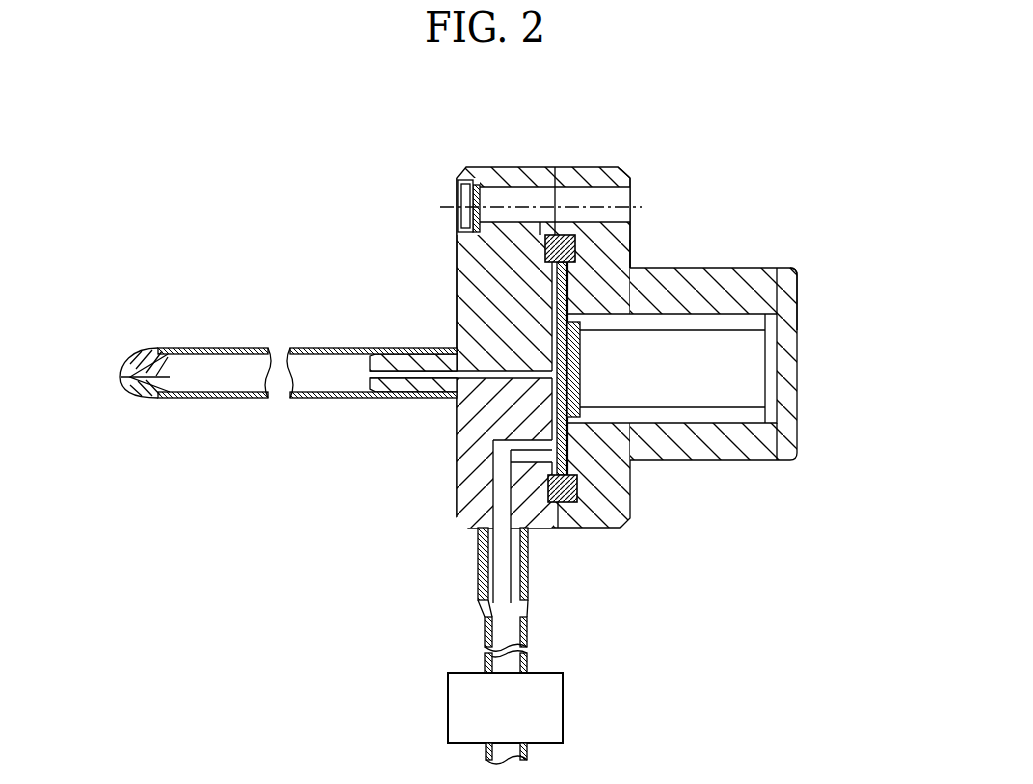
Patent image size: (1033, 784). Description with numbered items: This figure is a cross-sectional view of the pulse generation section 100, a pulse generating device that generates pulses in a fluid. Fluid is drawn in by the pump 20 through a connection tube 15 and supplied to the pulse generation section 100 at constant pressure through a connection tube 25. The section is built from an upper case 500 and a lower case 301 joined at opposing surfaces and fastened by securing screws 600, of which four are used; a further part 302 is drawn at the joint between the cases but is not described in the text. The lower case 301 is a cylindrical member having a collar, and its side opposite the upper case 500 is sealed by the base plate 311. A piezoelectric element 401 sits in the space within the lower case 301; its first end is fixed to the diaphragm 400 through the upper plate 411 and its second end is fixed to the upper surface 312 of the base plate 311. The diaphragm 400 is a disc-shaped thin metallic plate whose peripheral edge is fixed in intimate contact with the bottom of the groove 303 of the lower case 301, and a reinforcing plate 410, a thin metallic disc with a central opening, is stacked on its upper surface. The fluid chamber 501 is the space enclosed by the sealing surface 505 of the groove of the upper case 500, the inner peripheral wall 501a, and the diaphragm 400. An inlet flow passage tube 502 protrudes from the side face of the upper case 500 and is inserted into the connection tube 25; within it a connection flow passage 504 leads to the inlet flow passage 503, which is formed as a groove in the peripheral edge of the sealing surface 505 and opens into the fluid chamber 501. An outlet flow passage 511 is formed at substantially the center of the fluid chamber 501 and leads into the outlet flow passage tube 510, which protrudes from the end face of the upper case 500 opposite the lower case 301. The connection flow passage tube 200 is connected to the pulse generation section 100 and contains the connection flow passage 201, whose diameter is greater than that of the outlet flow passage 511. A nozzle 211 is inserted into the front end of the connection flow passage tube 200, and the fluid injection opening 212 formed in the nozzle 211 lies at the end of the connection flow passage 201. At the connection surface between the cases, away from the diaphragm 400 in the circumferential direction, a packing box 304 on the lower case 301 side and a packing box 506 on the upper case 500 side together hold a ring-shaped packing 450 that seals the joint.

The pulse generation section 100 is at (812, 109).
The upper case 500 is at (480, 167).
The packing box 506 is at (540, 232).
The partition plate 302 is at (555, 167).
The ring-shaped packing 450 is at (568, 235).
The securing screw 600 is at (445, 197).
The packing box 304 is at (630, 194).
The lower case 301 is at (719, 334).
The piezoelectric element 401 is at (742, 323).
The groove 303 is at (620, 254).
The reinforcing plate 410 is at (545, 265).
The inner peripheral wall 501a is at (550, 303).
The fluid chamber 501 is at (550, 338).
The diaphragm 400 is at (585, 325).
The upper plate 411 is at (582, 377).
The base plate 311 is at (797, 332).
The upper surface 312 is at (770, 365).
The connection flow passage 201 is at (220, 363).
The connection flow passage tube 200 is at (323, 348).
The nozzle 211 is at (134, 372).
The fluid injection opening 212 is at (120, 377).
The outlet flow passage tube 510 is at (398, 385).
The outlet flow passage 511 is at (433, 378).
The sealing surface 505 is at (552, 398).
The inlet flow passage tube 502 is at (478, 556).
The connection flow passage 504 is at (535, 448).
The inlet flow passage 503 is at (598, 450).
The connection tube 25 is at (484, 634).
The pump 20 is at (565, 686).
The connection tube 15 is at (527, 748).